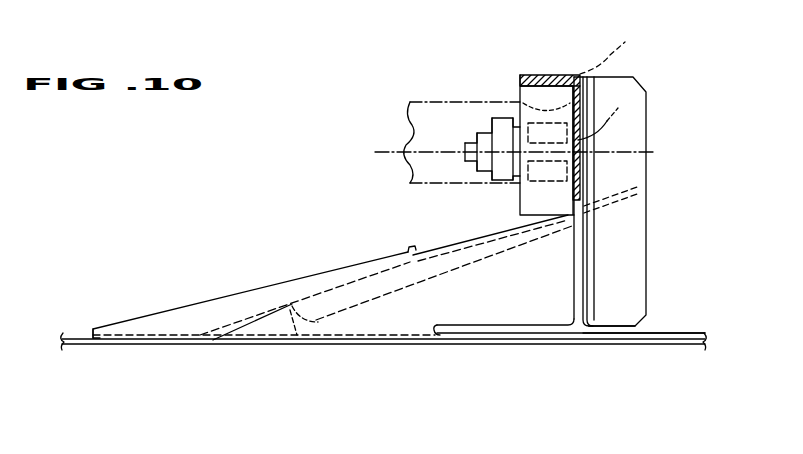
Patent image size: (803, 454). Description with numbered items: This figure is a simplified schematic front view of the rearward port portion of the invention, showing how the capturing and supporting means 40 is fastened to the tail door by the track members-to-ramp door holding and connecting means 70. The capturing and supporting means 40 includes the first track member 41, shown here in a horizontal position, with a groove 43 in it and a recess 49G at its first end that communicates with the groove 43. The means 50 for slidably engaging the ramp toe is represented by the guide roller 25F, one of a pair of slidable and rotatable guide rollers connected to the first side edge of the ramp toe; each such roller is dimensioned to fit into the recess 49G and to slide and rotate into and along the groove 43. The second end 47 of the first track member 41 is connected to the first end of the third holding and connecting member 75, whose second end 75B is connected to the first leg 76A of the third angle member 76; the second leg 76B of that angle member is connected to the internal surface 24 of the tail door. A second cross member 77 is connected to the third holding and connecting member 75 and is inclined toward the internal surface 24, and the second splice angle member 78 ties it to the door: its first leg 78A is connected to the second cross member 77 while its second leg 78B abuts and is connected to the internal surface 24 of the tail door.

The internal surface of the tail door 24 is at (673, 335).
The capturing and supporting means 40 is at (651, 221).
The first track member 41 is at (540, 77).
The groove 43 is at (520, 90).
The second end of the first track member 47 is at (613, 49).
The recess 49G is at (562, 77).
The means for slidably engaging the ramp toe 50 is at (487, 90).
The track members-to-ramp door holding and connecting means 70 is at (581, 234).
The third holding and connecting member 75 is at (639, 221).
The second end of the third holding and connecting member 75B is at (633, 313).
The third angle member 76 is at (560, 325).
The first leg of the third angle member 76A is at (573, 260).
The second leg of the third angle member 76B is at (463, 327).
The second cross member 77 is at (447, 246).
The second splice angle member 78 is at (326, 280).
The first leg of the second splice angle member 78A is at (387, 254).
The second leg of the second splice angle member 78B is at (93, 327).
The guide roller 25F is at (607, 120).